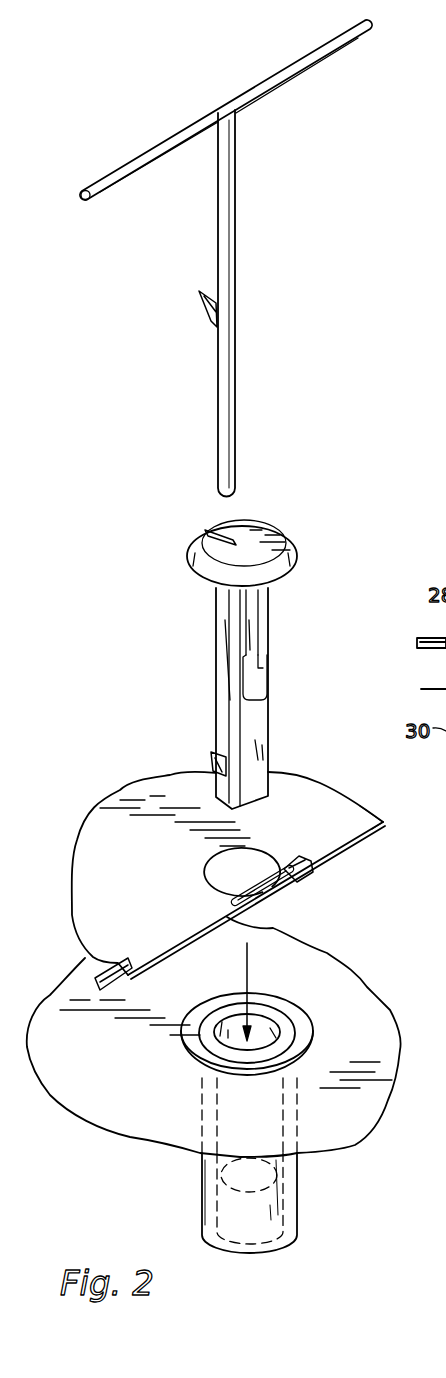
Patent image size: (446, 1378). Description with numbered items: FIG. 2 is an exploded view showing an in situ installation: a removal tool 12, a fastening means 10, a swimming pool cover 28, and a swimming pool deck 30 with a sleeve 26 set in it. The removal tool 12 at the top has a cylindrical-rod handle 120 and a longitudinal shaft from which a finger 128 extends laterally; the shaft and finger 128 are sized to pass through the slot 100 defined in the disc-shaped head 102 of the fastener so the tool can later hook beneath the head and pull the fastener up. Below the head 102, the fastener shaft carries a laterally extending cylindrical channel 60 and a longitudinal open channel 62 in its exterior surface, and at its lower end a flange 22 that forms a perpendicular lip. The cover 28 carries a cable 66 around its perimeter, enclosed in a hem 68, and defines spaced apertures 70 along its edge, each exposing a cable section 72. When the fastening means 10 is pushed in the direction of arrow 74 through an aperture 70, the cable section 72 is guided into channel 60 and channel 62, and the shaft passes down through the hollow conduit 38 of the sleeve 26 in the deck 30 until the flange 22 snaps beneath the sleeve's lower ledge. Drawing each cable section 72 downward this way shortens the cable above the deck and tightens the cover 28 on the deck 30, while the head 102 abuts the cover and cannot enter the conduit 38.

The fastening means 10 is at (270, 643).
The removal tool 12 is at (237, 413).
The flange 22 is at (220, 763).
The sleeve 26 is at (312, 1056).
The swimming pool cover 28 is at (153, 841).
The swimming pool deck 30 is at (113, 1051).
The conduit 38 is at (257, 1130).
The channel 60 is at (242, 664).
The channel 62 is at (240, 616).
The cable 66 is at (295, 884).
The hem 68 is at (320, 783).
The aperture 70 is at (236, 868).
The cable section 72 is at (277, 897).
The arrow 74 is at (247, 977).
The slot 100 is at (213, 517).
The head 102 is at (283, 517).
The handle 120 is at (127, 166).
The finger 128 is at (213, 320).